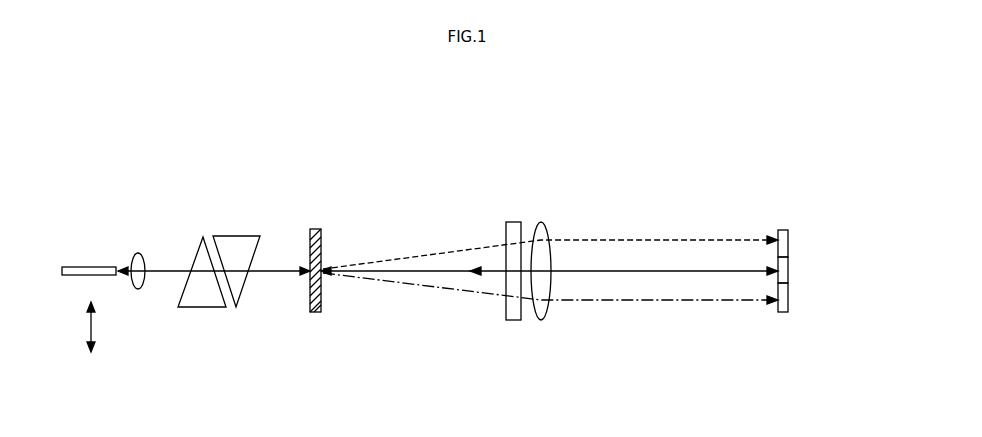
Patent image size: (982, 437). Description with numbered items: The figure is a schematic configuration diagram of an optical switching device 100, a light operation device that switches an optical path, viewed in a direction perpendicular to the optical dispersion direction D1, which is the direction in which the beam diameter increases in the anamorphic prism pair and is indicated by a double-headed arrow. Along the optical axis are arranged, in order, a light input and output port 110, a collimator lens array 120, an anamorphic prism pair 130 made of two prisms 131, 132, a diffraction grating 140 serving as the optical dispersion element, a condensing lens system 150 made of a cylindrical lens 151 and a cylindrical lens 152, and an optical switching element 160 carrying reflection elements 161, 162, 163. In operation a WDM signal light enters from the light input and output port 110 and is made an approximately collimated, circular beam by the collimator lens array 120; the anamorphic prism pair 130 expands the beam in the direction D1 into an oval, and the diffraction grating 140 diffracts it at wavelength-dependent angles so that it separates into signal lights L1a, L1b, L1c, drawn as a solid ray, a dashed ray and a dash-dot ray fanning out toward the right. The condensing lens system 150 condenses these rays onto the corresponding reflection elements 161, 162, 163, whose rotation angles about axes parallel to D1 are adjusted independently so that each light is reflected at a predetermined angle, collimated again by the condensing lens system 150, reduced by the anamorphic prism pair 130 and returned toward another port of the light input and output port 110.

The optical switching device 100 is at (713, 152).
The light input and output port 110 is at (93, 250).
The collimator lens array 120 is at (138, 240).
The anamorphic prism pair 130 is at (233, 208).
The prism 131 is at (202, 309).
The prism 132 is at (241, 295).
The diffraction grating 140 is at (315, 228).
The condensing lens system 150 is at (527, 203).
The cylindrical lens 151 is at (547, 308).
The cylindrical lens 152 is at (510, 320).
The optical switching element 160 is at (782, 228).
The reflection element 161 is at (790, 243).
The reflection element 162 is at (790, 272).
The reflection element 163 is at (790, 300).
The signal light L1a is at (667, 272).
The signal light L1b is at (643, 238).
The signal light L1c is at (725, 305).
The direction D1 is at (93, 327).